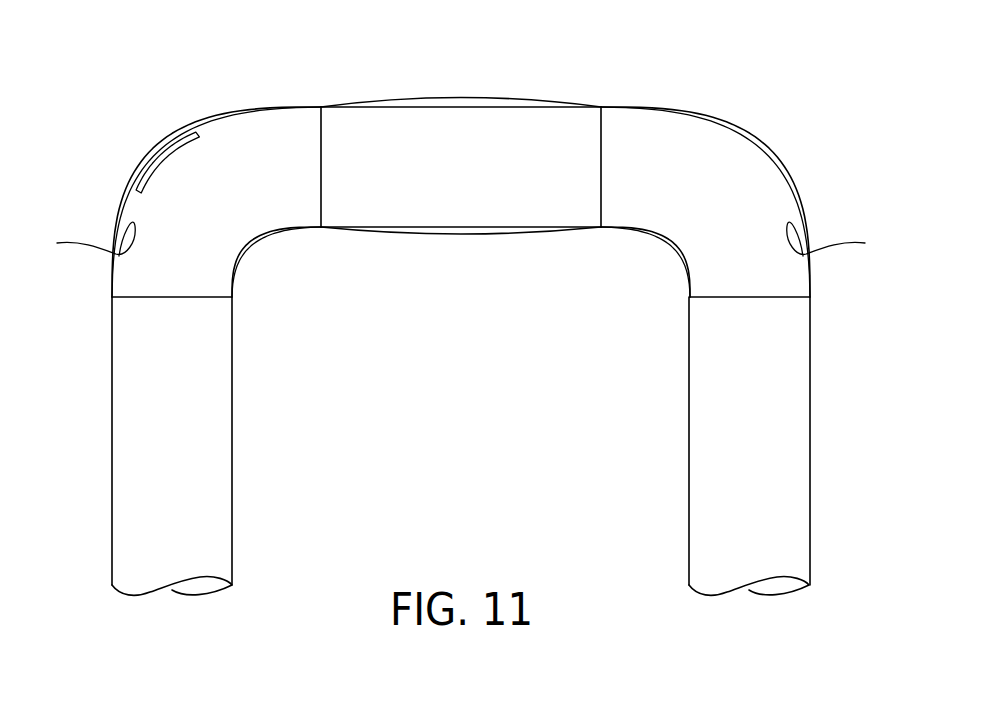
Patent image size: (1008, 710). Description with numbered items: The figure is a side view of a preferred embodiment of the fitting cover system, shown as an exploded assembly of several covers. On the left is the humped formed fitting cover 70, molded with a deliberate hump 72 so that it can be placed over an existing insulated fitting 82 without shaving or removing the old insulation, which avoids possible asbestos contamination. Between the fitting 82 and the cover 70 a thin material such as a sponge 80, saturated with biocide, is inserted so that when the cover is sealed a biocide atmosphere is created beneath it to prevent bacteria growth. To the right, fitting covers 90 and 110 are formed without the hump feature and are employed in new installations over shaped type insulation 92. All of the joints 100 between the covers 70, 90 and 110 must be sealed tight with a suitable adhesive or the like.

The humped formed fitting cover 70 is at (305, 104).
The hump 72 is at (181, 130).
The sponge 80 is at (150, 163).
The insulated fitting 82 is at (81, 243).
The fitting cover 90 is at (761, 146).
The shaped type insulation 92 is at (840, 244).
The joints 100 is at (322, 229).
The fitting cover 110 is at (505, 106).